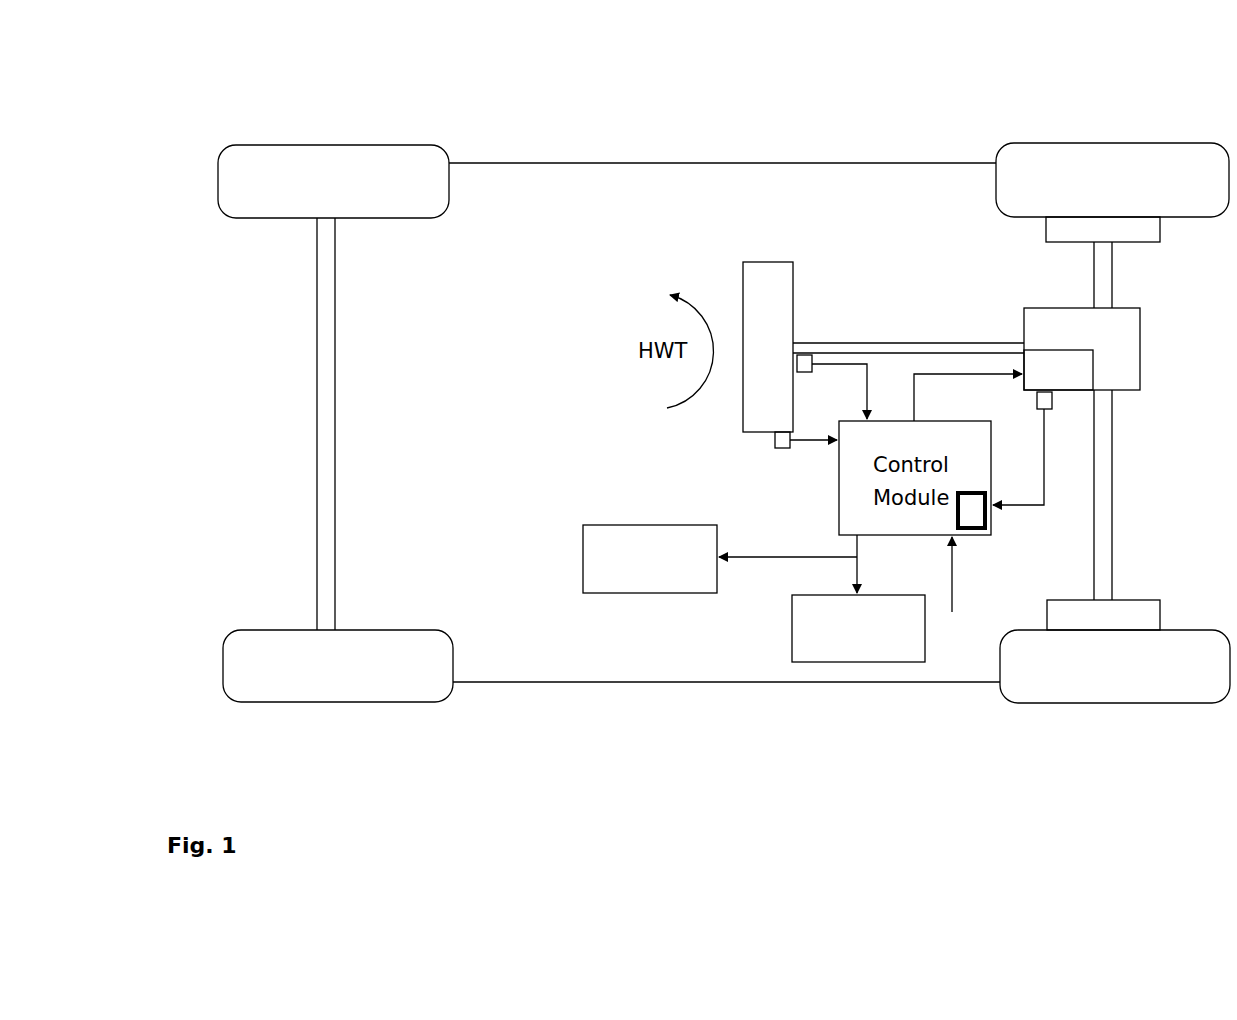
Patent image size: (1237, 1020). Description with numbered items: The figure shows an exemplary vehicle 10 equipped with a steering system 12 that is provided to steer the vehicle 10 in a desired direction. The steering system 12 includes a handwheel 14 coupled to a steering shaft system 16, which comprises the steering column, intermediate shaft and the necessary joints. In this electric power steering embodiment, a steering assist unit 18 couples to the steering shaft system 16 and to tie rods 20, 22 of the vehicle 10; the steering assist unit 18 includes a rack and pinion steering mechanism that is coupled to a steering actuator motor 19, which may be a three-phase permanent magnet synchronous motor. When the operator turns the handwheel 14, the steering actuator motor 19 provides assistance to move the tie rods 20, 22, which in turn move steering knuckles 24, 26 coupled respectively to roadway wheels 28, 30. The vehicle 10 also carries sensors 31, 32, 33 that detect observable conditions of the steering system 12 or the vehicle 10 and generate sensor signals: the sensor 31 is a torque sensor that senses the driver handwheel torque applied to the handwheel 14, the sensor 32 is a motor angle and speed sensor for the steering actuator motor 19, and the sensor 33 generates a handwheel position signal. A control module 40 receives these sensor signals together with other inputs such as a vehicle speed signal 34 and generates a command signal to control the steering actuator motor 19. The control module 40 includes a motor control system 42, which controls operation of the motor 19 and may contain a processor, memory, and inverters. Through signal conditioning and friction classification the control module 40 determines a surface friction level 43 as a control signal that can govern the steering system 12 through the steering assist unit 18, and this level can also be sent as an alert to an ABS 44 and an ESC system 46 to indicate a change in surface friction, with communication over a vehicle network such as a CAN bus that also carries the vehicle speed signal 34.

The vehicle 10 is at (765, 68).
The steering system 12 is at (881, 237).
The handwheel 14 is at (767, 262).
The steering shaft system 16 is at (875, 342).
The steering assist unit 18 is at (1140, 345).
The steering actuator motor 19 is at (1058, 370).
The tie rod 20 is at (1112, 290).
The tie rod 22 is at (1112, 468).
The steering knuckle 24 is at (1052, 225).
The steering knuckle 26 is at (1076, 600).
The roadway wheel 28 is at (1150, 143).
The roadway wheel 30 is at (1168, 630).
The torque sensor 31 is at (800, 373).
The motor angle and speed sensor 32 is at (1053, 400).
The handwheel position sensor 33 is at (780, 449).
The vehicle speed signal 34 is at (953, 590).
The control module 40 is at (935, 420).
The motor control system 42 is at (975, 527).
The surface friction level 43 is at (860, 580).
The ABS 44 is at (592, 525).
The ESC system 46 is at (792, 630).